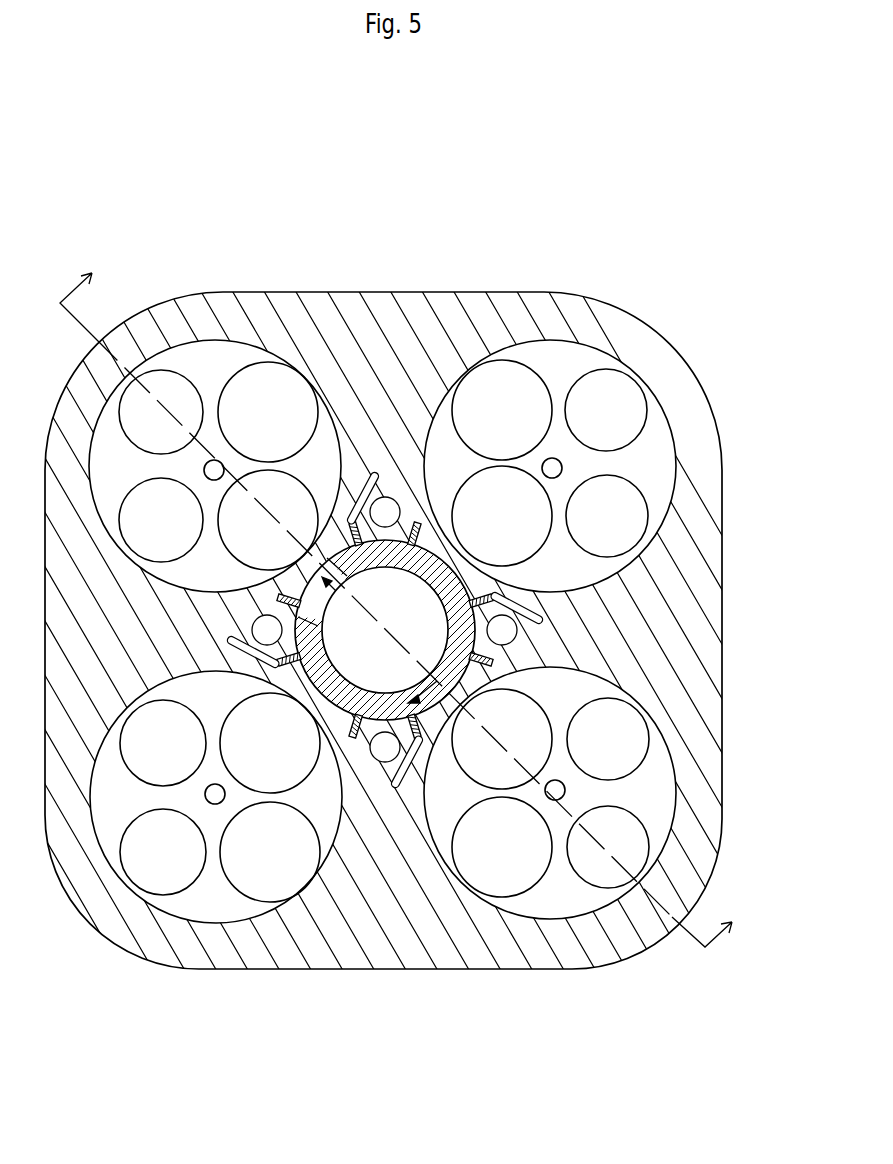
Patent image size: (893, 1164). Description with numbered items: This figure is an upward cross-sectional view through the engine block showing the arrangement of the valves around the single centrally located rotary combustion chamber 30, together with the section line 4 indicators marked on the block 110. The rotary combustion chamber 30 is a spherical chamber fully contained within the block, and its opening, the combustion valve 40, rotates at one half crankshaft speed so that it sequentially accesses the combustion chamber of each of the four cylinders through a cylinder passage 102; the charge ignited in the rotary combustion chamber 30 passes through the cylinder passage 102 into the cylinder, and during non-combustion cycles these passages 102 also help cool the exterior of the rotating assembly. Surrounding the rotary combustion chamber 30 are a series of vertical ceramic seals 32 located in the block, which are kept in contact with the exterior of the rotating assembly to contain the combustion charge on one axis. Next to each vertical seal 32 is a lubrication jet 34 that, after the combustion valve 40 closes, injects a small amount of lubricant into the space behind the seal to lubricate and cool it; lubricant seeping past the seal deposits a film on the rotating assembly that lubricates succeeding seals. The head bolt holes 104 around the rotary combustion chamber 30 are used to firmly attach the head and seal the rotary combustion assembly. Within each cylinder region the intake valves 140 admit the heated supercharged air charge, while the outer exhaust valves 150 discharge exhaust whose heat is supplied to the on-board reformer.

The housing block 110 is at (640, 325).
The cylinder passage 102 is at (315, 700).
The hole 104 is at (265, 630).
The rotary combustion chamber 30 is at (392, 613).
The vertical ceramic seal 32 is at (480, 658).
The lubrication jet 34 is at (532, 612).
The combustion valve 40 is at (338, 582).
The intake valve 140 is at (485, 414).
The outer exhaust valve 150 is at (590, 414).
The section line 4- 4 is at (396, 610).